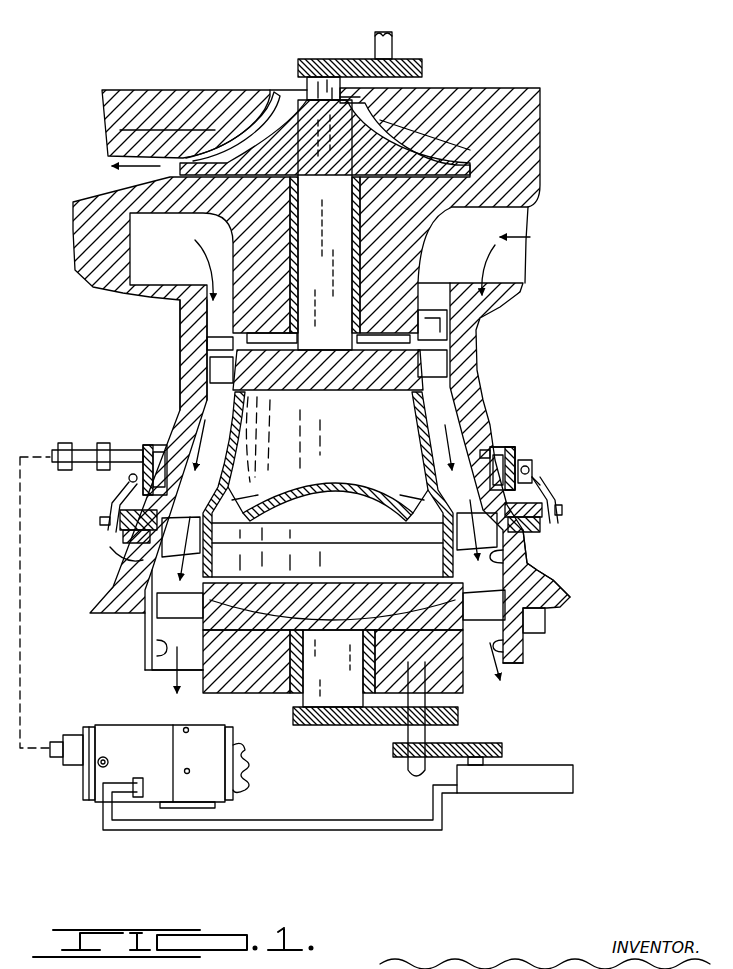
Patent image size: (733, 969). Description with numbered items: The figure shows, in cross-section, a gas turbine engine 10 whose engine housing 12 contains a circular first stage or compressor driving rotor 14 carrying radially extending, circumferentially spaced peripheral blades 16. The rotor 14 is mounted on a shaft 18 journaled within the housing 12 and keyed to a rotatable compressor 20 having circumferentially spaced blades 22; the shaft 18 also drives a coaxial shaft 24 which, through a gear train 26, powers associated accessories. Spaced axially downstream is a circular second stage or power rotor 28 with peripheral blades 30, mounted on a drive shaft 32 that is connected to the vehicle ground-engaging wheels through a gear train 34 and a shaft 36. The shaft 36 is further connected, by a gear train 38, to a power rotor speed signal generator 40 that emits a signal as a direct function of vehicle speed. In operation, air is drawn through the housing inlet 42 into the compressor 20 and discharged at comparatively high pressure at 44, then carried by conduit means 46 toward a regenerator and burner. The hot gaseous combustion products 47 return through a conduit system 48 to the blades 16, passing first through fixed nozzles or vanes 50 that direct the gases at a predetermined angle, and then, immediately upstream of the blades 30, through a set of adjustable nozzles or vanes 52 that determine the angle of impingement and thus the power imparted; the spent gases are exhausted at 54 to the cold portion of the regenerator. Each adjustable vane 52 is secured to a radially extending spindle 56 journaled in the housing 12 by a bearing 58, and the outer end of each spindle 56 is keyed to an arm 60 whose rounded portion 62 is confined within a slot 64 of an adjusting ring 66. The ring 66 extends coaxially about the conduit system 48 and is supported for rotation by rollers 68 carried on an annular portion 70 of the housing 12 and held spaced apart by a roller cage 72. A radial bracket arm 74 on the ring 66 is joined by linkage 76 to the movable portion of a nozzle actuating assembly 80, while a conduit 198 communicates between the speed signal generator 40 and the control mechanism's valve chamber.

The gas turbine engine 10 is at (500, 86).
The engine housing 12 is at (175, 318).
The compressor driving rotor 14 is at (318, 388).
The peripheral blades 16 is at (210, 375).
The shaft 18 is at (325, 225).
The compressor 20 is at (325, 137).
The compressor blades 22 is at (250, 124).
The coaxial shaft 24 is at (307, 82).
The gear train 26 is at (350, 56).
The power rotor 28 is at (331, 606).
The power rotor blades 30 is at (150, 628).
The drive shaft 32 is at (333, 668).
The gear train 34 is at (368, 727).
The shaft 36 is at (406, 768).
The gear train 38 is at (445, 742).
The power rotor speed signal generator 40 is at (548, 763).
The housing inlet 42 is at (265, 100).
The compressor discharge 44 is at (186, 124).
The conduit means 46 is at (112, 165).
The hot gaseous combustion products 47 is at (518, 240).
The conduit system 48 is at (185, 306).
The fixed nozzles or vanes 50 is at (207, 345).
The adjustable nozzles or vanes 52 is at (540, 568).
The exhaust 54 is at (165, 680).
The spindle 56 is at (115, 555).
The bearing 58 is at (120, 540).
The arm 60 is at (110, 500).
The pivot 62 is at (128, 480).
The slot 64 is at (540, 480).
The adjusting ring 66 is at (520, 470).
The rollers 68 is at (167, 470).
The annular portion 70 is at (170, 445).
The roller cage 72 is at (512, 447).
The radial bracket arm 74 is at (120, 450).
The linkage 76 is at (80, 448).
The nozzle actuating assembly 80 is at (90, 775).
The conduit 198 is at (322, 832).